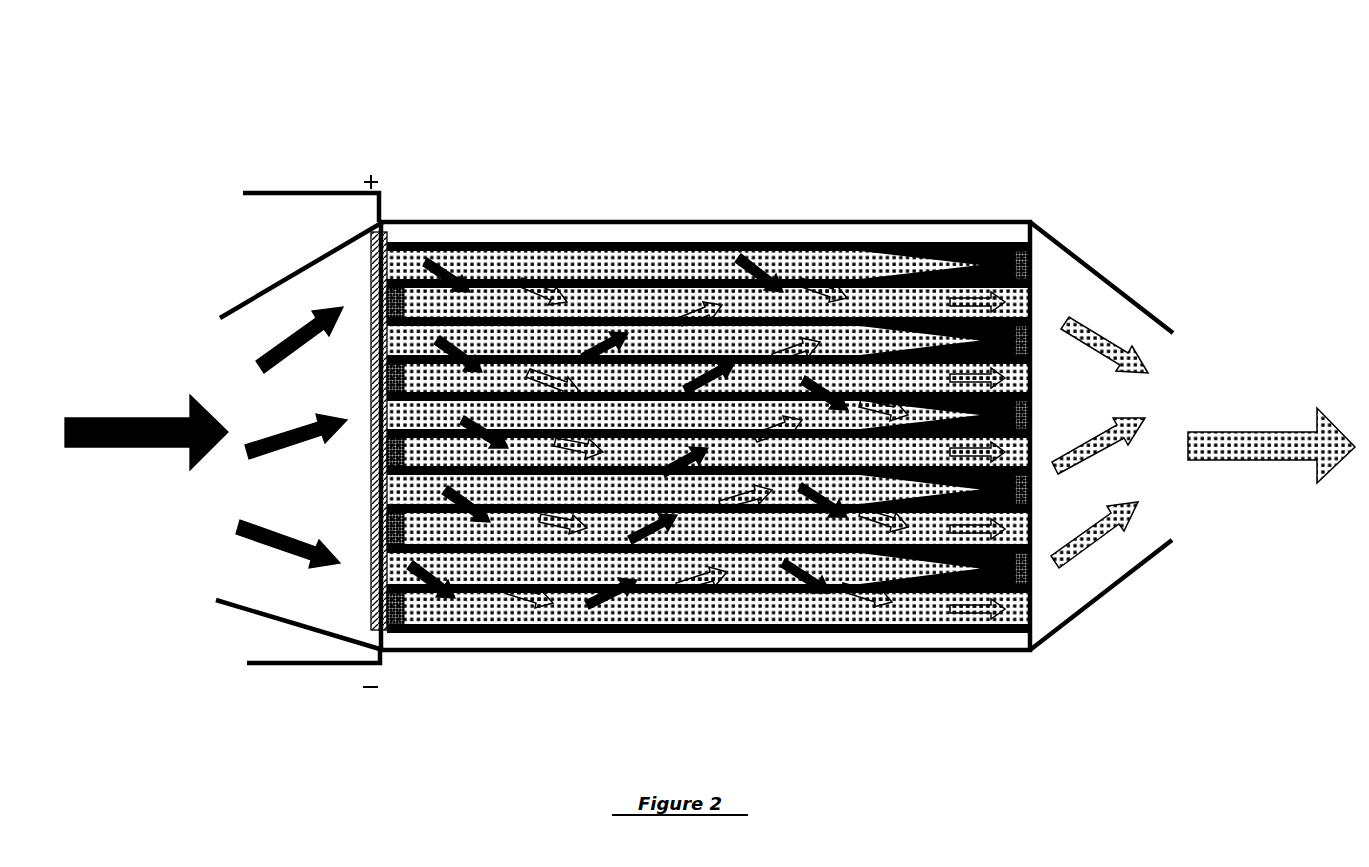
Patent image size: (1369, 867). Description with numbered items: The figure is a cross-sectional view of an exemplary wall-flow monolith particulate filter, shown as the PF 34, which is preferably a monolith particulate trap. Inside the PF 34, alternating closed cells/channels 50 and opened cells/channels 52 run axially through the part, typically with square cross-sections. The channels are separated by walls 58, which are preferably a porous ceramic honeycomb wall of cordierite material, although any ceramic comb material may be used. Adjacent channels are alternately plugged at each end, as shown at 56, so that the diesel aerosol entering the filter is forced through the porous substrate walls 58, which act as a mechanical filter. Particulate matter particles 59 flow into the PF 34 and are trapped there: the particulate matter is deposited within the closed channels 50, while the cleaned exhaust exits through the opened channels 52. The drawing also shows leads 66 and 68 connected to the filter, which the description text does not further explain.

The particulate filter 34 is at (685, 104).
The closed cells/channels 50 is at (852, 262).
The opened cells/channels 52 is at (765, 527).
The plugs 56 is at (1032, 337).
The walls 58 is at (672, 288).
The particulate matter particles 59 is at (997, 260).
The positive electrical lead 66 is at (297, 193).
The negative electrical lead 68 is at (330, 666).